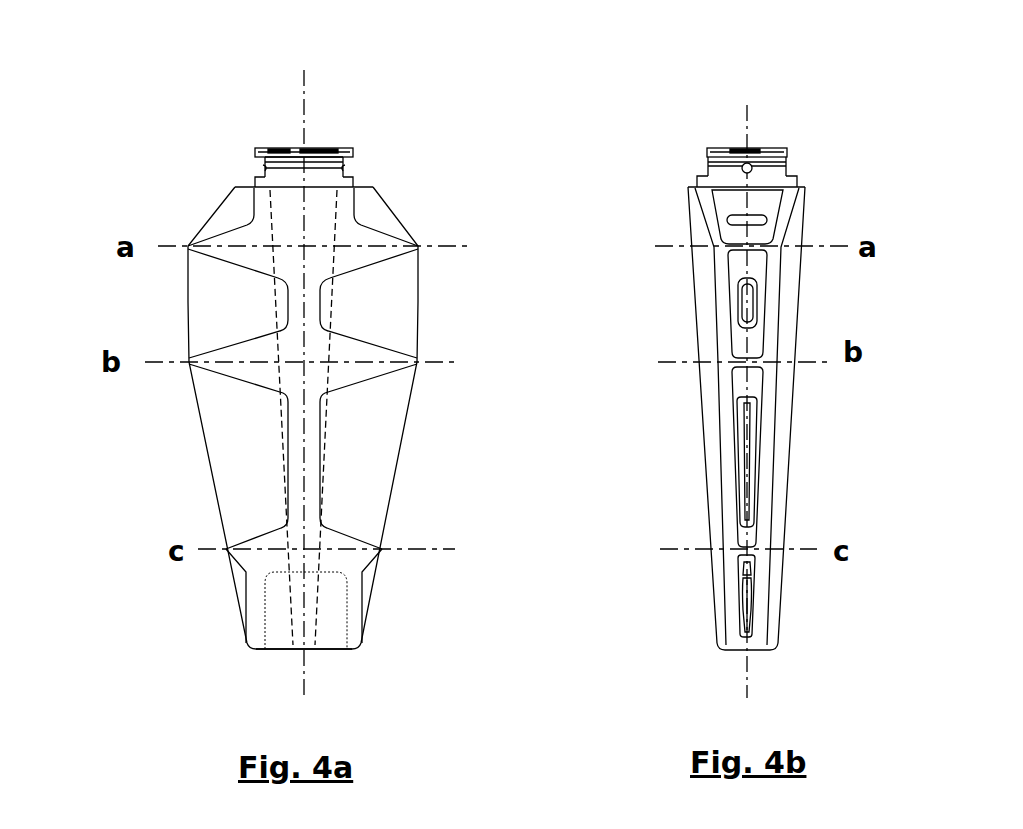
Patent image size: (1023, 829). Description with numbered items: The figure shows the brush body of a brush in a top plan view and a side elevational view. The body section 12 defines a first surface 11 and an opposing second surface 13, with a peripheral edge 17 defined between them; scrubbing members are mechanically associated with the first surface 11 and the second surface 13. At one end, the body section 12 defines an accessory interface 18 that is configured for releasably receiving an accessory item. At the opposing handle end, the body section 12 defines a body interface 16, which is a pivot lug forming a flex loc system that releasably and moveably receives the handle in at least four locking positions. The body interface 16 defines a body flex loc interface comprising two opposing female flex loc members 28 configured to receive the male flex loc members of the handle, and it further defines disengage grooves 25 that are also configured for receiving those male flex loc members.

In FIG. 4a, the first surface 11 is at (382, 483).
In FIG. 4b, the first surface 11 is at (684, 326).
In FIG. 4a, the body section 12 is at (140, 172).
In FIG. 4b, the body section 12 is at (849, 198).
In FIG. 4b, the second surface 13 is at (806, 400).
In FIG. 4a, the body interface 16 is at (333, 148).
In FIG. 4a, the peripheral edge 17 is at (408, 433).
In FIG. 4b, the peripheral edge 17 is at (727, 502).
In FIG. 4a, the accessory interface 18 is at (266, 660).
In FIG. 4a, the disengage grooves 25 is at (282, 149).
In FIG. 4a, the female flex loc members 28 is at (342, 168).
In FIG. 4b, the female flex loc members 28 is at (742, 168).